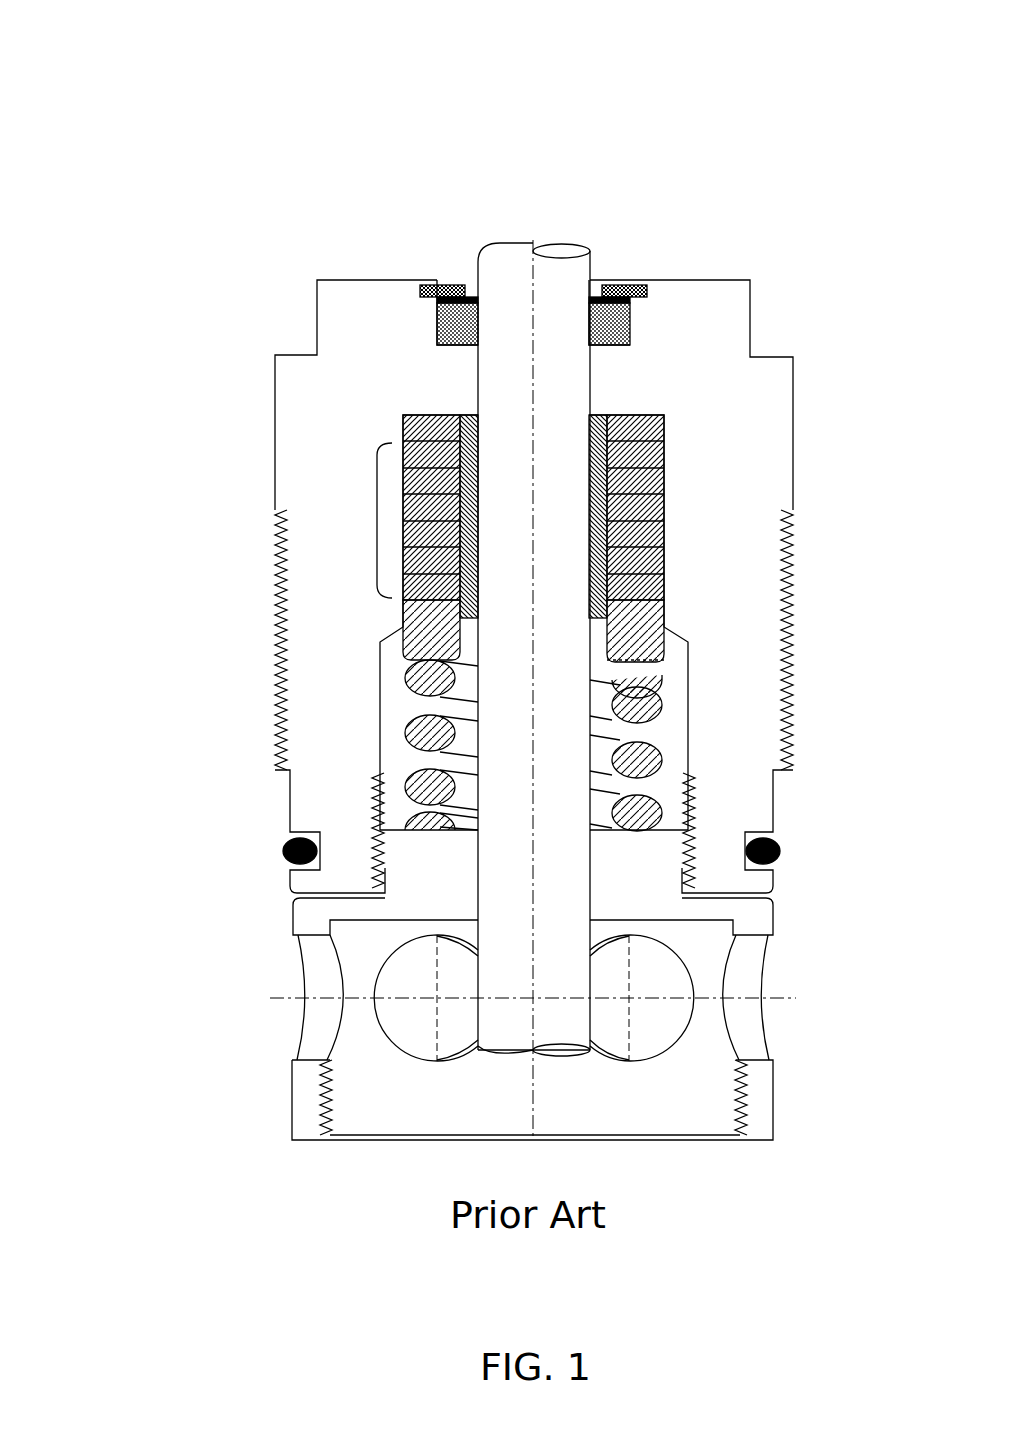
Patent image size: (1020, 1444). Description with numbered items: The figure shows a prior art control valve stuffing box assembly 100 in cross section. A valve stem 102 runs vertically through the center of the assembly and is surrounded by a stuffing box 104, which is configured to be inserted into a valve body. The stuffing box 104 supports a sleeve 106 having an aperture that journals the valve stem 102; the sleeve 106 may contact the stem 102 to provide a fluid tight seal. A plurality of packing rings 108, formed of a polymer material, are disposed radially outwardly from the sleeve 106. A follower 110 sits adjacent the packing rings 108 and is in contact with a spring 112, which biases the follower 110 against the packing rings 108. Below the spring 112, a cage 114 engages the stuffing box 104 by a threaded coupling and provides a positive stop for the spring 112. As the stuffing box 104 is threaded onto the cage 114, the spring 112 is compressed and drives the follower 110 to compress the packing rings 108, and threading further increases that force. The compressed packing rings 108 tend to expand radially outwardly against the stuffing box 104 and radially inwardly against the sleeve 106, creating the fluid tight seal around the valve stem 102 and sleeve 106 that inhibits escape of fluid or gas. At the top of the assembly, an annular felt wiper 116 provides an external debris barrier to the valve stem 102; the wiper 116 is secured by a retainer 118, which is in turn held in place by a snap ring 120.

The valve stuffing box assembly 100 is at (623, 92).
The valve stem 102 is at (503, 243).
The stuffing box 104 is at (690, 325).
The sleeve 106 is at (408, 418).
The packing rings 108 is at (372, 515).
The follower 110 is at (410, 625).
The spring 112 is at (415, 730).
The cage 114 is at (320, 997).
The annular felt wiper 116 is at (435, 322).
The retainer 118 is at (620, 290).
The snap ring 120 is at (425, 288).